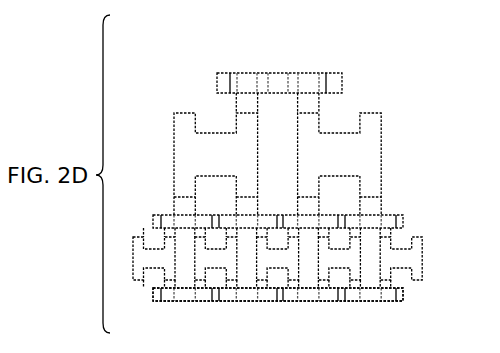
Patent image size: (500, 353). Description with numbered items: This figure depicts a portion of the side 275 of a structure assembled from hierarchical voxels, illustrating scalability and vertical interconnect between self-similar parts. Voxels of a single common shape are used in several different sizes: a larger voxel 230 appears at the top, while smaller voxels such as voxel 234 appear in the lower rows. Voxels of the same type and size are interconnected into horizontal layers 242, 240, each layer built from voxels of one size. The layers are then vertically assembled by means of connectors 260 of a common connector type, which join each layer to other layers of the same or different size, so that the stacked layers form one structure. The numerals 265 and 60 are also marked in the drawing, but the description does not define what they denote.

The side 275 is at (385, 52).
The voxel 230 is at (217, 80).
The connector 260 is at (182, 113).
The horizontal layer 242 is at (148, 203).
The horizontal layer 240 is at (148, 285).
The small H-shaped structures 265 is at (422, 264).
The voxel 234 is at (373, 301).
The partial numeral 60 is at (9, 226).